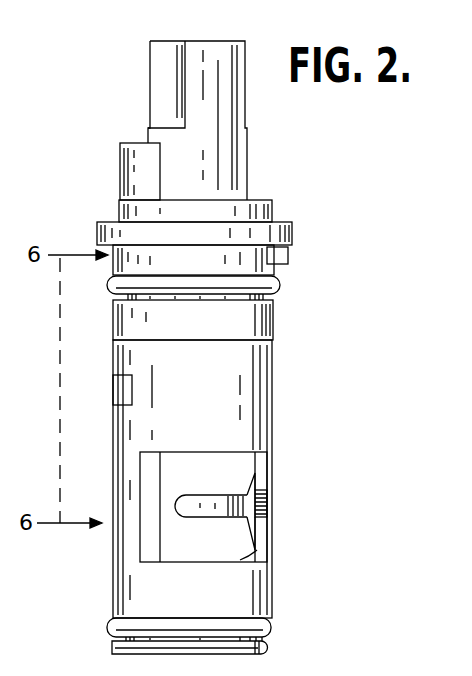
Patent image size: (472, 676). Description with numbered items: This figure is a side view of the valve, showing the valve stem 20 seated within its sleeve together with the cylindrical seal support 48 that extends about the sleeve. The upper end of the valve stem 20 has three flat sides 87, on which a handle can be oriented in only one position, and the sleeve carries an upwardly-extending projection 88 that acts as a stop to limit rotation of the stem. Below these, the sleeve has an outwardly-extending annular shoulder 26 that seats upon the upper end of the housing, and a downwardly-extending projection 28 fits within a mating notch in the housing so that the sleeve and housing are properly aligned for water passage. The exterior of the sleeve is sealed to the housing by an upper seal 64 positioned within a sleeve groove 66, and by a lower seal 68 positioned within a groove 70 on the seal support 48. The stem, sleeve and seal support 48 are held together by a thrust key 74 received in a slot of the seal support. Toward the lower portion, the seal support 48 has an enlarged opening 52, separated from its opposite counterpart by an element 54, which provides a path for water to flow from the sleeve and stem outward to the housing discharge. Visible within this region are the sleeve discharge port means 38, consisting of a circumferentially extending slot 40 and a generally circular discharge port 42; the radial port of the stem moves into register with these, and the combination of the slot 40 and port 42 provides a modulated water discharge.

The valve stem 20 is at (247, 163).
The annular shoulder 26 is at (100, 222).
The downwardly-extending projection 28 is at (288, 260).
The sleeve discharge port means 38 is at (260, 518).
The circumferentially extending slot 40 is at (185, 507).
The circular discharge port 42 is at (255, 483).
The cylindrical seal support 48 is at (112, 552).
The opening 52 is at (242, 560).
The element 54 is at (267, 540).
The upper seal 64 is at (110, 285).
The sleeve groove 66 is at (193, 300).
The lower seal 68 is at (270, 625).
The groove 70 is at (113, 640).
The thrust key 74 is at (120, 388).
The flat sides 87 is at (162, 82).
The upwardly-extending projection 88 is at (127, 163).